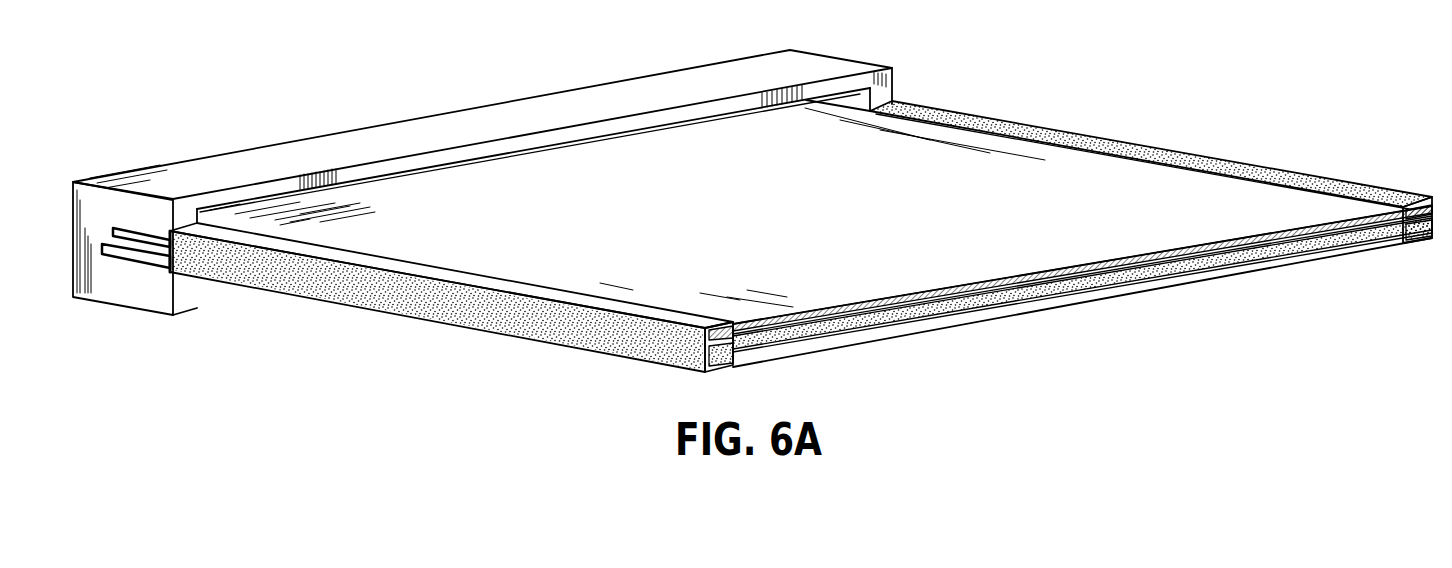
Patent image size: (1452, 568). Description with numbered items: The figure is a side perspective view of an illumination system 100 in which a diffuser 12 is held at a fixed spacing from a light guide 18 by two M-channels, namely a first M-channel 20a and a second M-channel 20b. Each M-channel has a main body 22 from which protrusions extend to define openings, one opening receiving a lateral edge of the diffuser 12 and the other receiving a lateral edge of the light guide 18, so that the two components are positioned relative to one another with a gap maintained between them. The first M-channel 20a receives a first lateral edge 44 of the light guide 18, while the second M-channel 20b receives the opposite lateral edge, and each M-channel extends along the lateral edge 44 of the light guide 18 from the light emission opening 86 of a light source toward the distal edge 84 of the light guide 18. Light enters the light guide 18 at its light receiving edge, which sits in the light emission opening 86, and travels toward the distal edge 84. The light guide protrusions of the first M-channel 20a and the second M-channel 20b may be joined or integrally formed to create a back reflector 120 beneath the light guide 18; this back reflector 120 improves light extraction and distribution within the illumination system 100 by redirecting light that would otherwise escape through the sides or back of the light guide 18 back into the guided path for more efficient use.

The illumination system 100 is at (697, 45).
The diffuser 12 is at (530, 180).
The light guide 18 is at (920, 328).
The first M-channel 20a is at (428, 270).
The second M-channel 20b is at (1213, 158).
The main body 22 is at (516, 325).
The first lateral edge of the light guide 44 is at (727, 357).
The distal edge of the light guide 84 is at (1077, 280).
The light emission opening 86 is at (102, 250).
The back reflector 120 is at (1182, 283).